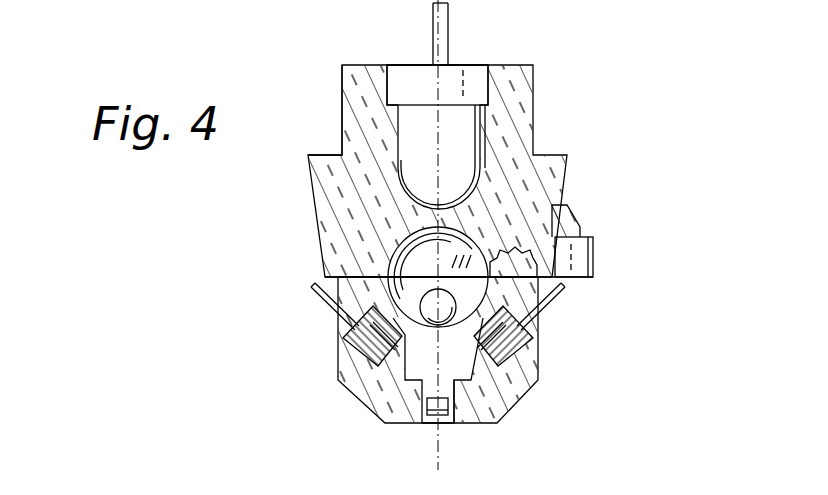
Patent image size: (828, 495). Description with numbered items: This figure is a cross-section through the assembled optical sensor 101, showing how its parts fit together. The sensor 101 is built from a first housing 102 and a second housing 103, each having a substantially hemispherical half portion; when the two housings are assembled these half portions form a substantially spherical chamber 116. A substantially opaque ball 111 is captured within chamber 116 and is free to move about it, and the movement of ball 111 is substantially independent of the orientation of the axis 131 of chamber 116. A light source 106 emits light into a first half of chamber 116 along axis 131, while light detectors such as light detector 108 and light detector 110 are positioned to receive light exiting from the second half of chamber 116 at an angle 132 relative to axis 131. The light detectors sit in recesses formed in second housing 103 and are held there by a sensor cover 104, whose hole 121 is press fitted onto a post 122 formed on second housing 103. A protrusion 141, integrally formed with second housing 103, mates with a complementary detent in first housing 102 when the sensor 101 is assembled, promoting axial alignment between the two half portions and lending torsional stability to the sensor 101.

The optical sensor 101 is at (342, 78).
The first housing 102 is at (503, 153).
The second housing 103 is at (548, 306).
The sensor cover 104 is at (367, 398).
The light source 106 is at (418, 80).
The light detector 108 is at (490, 358).
The light detector 110 is at (365, 340).
The substantially opaque ball 111 is at (461, 261).
The chamber 116 is at (487, 240).
The hole 121 is at (430, 418).
The post 122 is at (462, 403).
The axis 131 is at (463, 243).
The angle 132 is at (395, 368).
The protrusion 141 is at (520, 273).